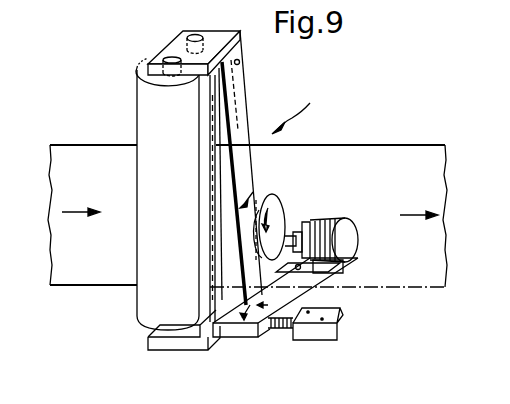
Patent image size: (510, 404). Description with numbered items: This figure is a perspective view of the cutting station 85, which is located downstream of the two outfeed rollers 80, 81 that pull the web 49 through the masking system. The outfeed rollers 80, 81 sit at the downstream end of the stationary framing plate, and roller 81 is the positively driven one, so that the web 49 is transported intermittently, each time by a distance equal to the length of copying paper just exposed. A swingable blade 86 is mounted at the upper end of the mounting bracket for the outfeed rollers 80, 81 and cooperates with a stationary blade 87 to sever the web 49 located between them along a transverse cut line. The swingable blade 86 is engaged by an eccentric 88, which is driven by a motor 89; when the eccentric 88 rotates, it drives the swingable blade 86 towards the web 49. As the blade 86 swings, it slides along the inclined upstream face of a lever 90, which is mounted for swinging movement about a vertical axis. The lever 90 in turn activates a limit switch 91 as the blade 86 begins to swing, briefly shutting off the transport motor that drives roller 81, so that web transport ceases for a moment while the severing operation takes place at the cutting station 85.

The web 49 is at (362, 145).
The outfeed roller 80 is at (167, 44).
The outfeed roller 81 is at (143, 85).
The cutting station 85 is at (302, 109).
The swingable blade 86 is at (240, 97).
The stationary blade 87 is at (217, 303).
The eccentric 88 is at (280, 213).
The motor 89 is at (330, 220).
The lever 90 is at (252, 332).
The limit switch 91 is at (315, 335).